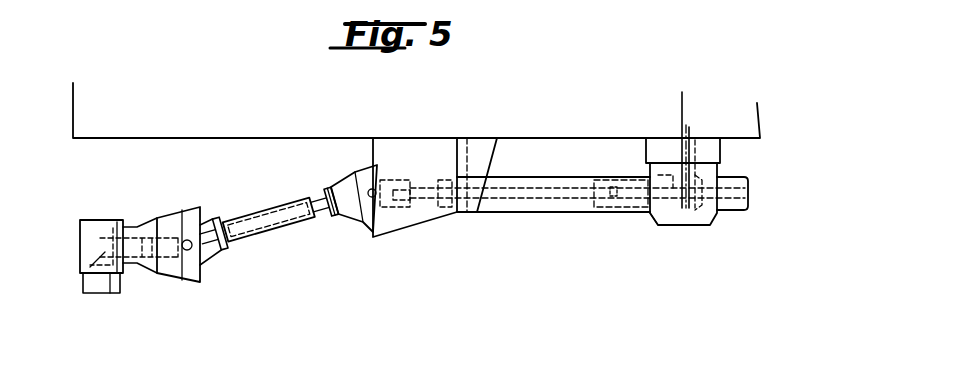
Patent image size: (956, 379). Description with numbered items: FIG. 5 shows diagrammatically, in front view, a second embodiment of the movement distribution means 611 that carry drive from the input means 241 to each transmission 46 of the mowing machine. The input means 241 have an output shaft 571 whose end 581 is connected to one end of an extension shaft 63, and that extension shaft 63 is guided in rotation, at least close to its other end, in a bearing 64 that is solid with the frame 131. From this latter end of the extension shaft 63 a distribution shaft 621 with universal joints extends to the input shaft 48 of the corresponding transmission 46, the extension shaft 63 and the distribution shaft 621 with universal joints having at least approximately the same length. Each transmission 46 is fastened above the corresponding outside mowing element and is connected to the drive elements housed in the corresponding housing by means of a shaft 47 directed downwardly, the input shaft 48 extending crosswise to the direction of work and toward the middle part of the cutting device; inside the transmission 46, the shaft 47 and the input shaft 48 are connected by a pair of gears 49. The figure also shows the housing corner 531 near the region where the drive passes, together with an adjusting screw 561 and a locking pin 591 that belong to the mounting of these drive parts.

The frame 131 is at (165, 138).
The transmission 46 is at (87, 221).
The shaft 47 is at (101, 293).
The input shaft 48 is at (154, 240).
The pair of gears 49 is at (103, 259).
The distribution shaft with universal joints 621 is at (248, 207).
The movement distribution means 611 is at (329, 228).
The bearing 64 is at (460, 214).
The extension shaft 63 is at (527, 201).
The end of the output shaft 581 is at (623, 193).
The input means 241 is at (650, 170).
The housing corner 531 is at (656, 214).
The output shaft 571 is at (663, 195).
The adjusting screw 561 is at (677, 127).
The locking pin 591 is at (702, 162).